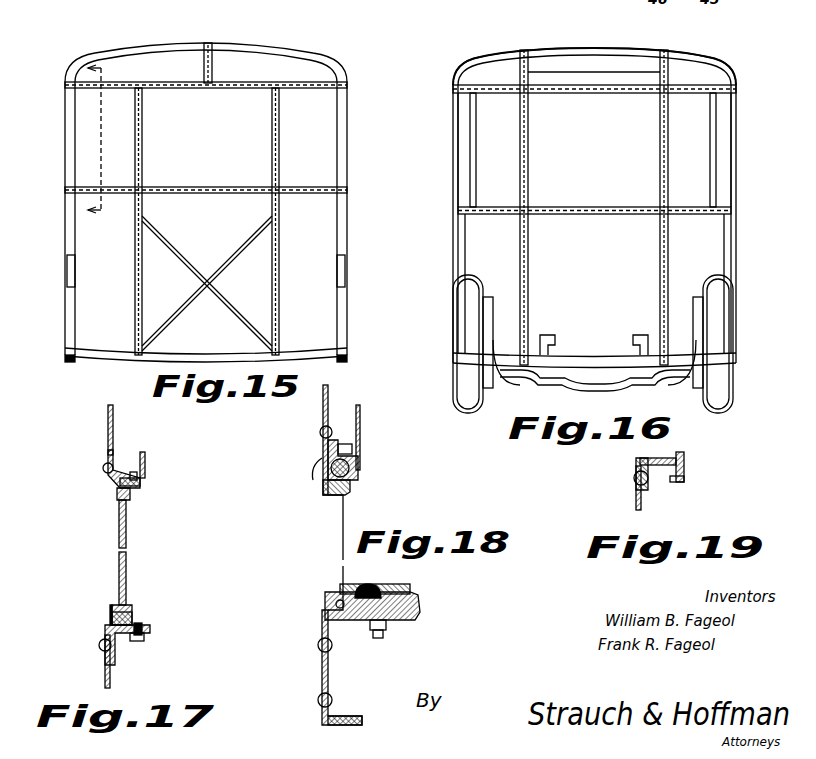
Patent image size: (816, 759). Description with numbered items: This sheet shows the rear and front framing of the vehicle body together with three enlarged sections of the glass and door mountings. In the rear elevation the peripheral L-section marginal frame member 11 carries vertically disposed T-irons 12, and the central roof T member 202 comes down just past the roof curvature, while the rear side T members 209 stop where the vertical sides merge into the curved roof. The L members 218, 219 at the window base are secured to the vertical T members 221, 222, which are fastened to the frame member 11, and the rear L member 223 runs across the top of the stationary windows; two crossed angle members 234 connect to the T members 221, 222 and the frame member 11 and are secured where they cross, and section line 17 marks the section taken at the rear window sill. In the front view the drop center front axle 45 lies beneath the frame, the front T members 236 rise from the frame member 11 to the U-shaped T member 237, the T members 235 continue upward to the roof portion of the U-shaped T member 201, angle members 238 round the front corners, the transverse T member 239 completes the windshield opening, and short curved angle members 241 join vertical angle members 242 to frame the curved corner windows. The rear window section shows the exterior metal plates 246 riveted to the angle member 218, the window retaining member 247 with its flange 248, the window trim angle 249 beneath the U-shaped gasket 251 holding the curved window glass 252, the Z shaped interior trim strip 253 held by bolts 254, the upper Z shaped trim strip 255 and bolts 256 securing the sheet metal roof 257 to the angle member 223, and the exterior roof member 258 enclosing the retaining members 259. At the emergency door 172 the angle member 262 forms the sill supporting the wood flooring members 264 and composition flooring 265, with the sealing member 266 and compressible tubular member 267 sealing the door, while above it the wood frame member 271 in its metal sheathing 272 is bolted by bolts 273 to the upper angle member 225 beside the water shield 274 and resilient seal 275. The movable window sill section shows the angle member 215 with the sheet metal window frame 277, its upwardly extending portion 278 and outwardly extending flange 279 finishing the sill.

In FIG. 15, the marginal frame member 11 is at (348, 356).
In FIG. 18, the marginal frame member 11 is at (345, 718).
In FIG. 16, the T-iron 12 is at (585, 356).
In FIG. 15, the section line 17— 17 is at (112, 140).
In FIG. 16, the front axle 45 is at (530, 374).
In FIG. 18, the emergency door 172 is at (332, 525).
In FIG. 16, the T member 201 is at (456, 70).
In FIG. 15, the central T member 202 is at (213, 44).
In FIG. 16, the central T member 202 is at (590, 48).
In FIG. 15, the rear side T member 209 is at (70, 150).
In FIG. 19, the angle member 215 is at (650, 466).
In FIG. 15, the L member 218 is at (78, 192).
In FIG. 17, the L member 218 is at (115, 646).
In FIG. 15, the L member 219 is at (208, 194).
In FIG. 15, the vertical T member 221 is at (270, 292).
In FIG. 15, the vertical T member 222 is at (143, 118).
In FIG. 15, the rear L member 223 is at (235, 86).
In FIG. 17, the rear L member 223 is at (114, 458).
In FIG. 18, the upper angle member 225 is at (329, 430).
In FIG. 15, the crossed angle member 234 is at (222, 270).
In FIG. 16, the T member 235 is at (594, 73).
In FIG. 16, the front T member 236 is at (663, 158).
In FIG. 16, the T member 237 is at (565, 94).
In FIG. 16, the angle member 238 is at (473, 215).
In FIG. 16, the transverse T member 239 is at (590, 215).
In FIG. 16, the curved angle member 241 is at (491, 200).
In FIG. 16, the vertical angle member 242 is at (477, 104).
In FIG. 17, the metal plate 246 is at (105, 672).
In FIG. 18, the metal plate 246 is at (322, 672).
In FIG. 19, the metal plate 246 is at (636, 500).
In FIG. 17, the window retaining member 247 is at (100, 646).
In FIG. 17, the flange 248 is at (114, 616).
In FIG. 17, the window trim angle 249 is at (132, 614).
In FIG. 17, the gasket 251 is at (130, 497).
In FIG. 17, the window glass 252 is at (118, 530).
In FIG. 17, the Z shaped interior trim strip 253 is at (142, 630).
In FIG. 17, the bolt 254 is at (144, 640).
In FIG. 17, the Z shaped trim strip 255 is at (144, 477).
In FIG. 17, the bolt 256 is at (135, 486).
In FIG. 17, the sheet metal roof 257 is at (146, 462).
In FIG. 18, the sheet metal roof 257 is at (361, 420).
In FIG. 17, the exterior roof member 258 is at (108, 432).
In FIG. 17, the retaining member 259 is at (112, 487).
In FIG. 18, the angle member 262 is at (338, 630).
In FIG. 18, the flooring member 264 is at (420, 608).
In FIG. 18, the composition flooring 265 is at (382, 596).
In FIG. 18, the sealing member 266 is at (356, 598).
In FIG. 18, the compressible tubular member 267 is at (335, 608).
In FIG. 18, the wood frame member 271 is at (358, 462).
In FIG. 18, the metal sheathing 272 is at (358, 476).
In FIG. 18, the bolt 273 is at (352, 448).
In FIG. 18, the water shield 274 is at (314, 470).
In FIG. 18, the resilient seal 275 is at (347, 492).
In FIG. 19, the sheet metal window frame 277 is at (637, 470).
In FIG. 19, the upwardly extending portion 278 is at (685, 455).
In FIG. 19, the flange 279 is at (685, 480).